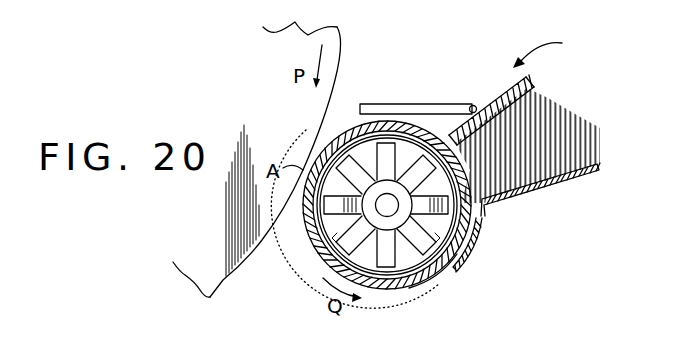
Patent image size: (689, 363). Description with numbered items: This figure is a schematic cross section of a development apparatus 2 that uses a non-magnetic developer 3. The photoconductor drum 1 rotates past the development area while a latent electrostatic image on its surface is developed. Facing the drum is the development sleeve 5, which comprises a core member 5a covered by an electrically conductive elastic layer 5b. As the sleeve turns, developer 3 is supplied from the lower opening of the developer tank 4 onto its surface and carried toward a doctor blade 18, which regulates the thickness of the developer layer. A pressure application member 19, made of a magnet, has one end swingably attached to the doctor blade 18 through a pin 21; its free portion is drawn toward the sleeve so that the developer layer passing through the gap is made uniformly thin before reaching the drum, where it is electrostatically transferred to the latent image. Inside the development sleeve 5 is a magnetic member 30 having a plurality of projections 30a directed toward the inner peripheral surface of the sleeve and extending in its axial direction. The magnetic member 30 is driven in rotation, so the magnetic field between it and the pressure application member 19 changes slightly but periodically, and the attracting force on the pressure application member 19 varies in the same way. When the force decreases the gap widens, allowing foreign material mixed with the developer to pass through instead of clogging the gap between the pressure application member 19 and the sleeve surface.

The photoconductor drum 1 is at (223, 280).
The feed direction arrow / material supply 2 is at (544, 50).
The developer 3 is at (555, 165).
The developer tank 4 is at (510, 201).
The development sleeve 5 is at (380, 301).
The core member 5a is at (418, 274).
The electrically conductive elastic layer 5b is at (438, 268).
The doctor blade 18 is at (533, 84).
The pressure application member 19 is at (407, 104).
The pin 21 is at (472, 105).
The magnetic member 30 is at (315, 246).
The projections 30a is at (477, 243).